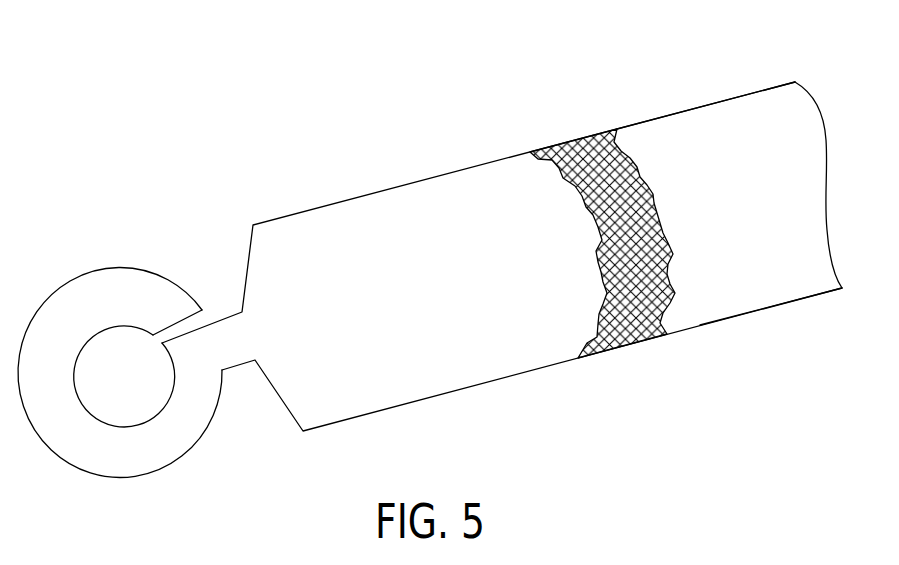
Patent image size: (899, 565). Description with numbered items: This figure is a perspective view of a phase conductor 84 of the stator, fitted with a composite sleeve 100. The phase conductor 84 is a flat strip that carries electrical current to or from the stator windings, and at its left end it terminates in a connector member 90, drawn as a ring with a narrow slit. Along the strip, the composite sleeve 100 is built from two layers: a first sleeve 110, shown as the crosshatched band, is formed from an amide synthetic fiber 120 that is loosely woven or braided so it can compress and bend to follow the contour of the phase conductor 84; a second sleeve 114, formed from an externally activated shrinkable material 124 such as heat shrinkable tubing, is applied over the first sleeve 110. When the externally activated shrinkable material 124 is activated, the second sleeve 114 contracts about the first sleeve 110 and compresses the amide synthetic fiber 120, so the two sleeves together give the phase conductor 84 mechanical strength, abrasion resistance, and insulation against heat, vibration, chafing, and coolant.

The composite sleeve 100 is at (430, 281).
The connector member 90 is at (160, 467).
The phase conductor 84 is at (437, 374).
The first sleeve 110 is at (627, 321).
The amide synthetic fiber 120 is at (579, 147).
The externally activated shrinkable material 124 is at (717, 117).
The second sleeve 114 is at (778, 288).